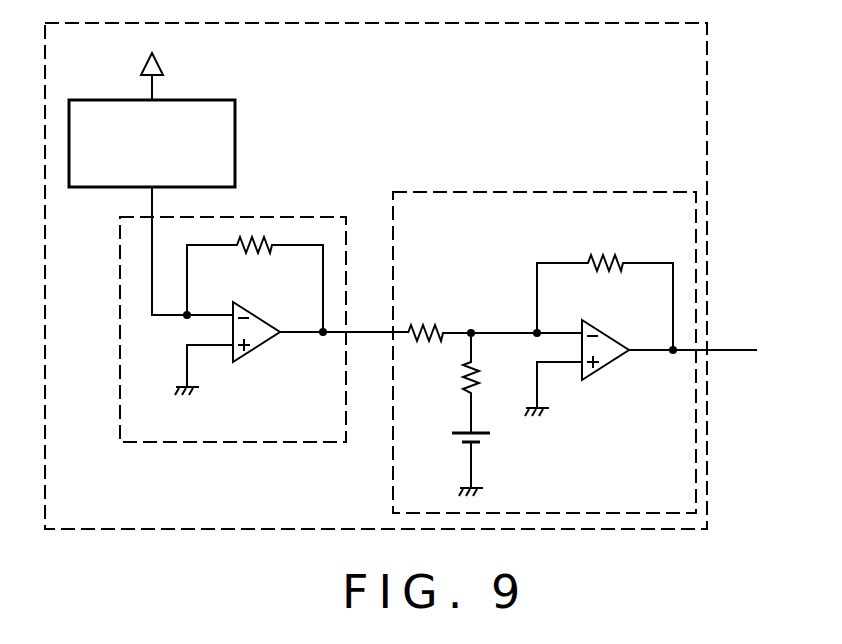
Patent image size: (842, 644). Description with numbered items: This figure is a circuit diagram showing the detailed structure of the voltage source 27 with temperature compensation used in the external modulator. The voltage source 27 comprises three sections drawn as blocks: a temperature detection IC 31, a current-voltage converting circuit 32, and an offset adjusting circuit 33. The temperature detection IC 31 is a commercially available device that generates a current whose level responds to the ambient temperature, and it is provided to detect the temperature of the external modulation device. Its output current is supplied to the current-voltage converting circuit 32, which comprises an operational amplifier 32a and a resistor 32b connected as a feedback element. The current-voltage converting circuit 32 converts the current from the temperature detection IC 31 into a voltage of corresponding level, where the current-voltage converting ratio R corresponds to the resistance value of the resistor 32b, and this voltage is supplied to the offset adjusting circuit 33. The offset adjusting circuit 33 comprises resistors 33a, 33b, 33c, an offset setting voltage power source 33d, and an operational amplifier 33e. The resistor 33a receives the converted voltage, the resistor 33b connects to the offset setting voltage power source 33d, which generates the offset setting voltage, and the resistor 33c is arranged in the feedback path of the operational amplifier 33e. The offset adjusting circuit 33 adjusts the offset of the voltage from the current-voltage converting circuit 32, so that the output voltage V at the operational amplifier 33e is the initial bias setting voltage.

The voltage source with temperature compensation 27 is at (708, 70).
The temperature detection IC 31 is at (236, 121).
The current-voltage converting circuit 32 is at (326, 216).
The operational amplifier 32a is at (262, 349).
The resistor 32b is at (261, 235).
The offset adjusting circuit 33 is at (501, 191).
The resistor 33a is at (425, 318).
The resistor 33b is at (460, 374).
The resistor 33c is at (609, 256).
The offset setting voltage power source 33d is at (488, 437).
The operational amplifier 33e is at (610, 366).